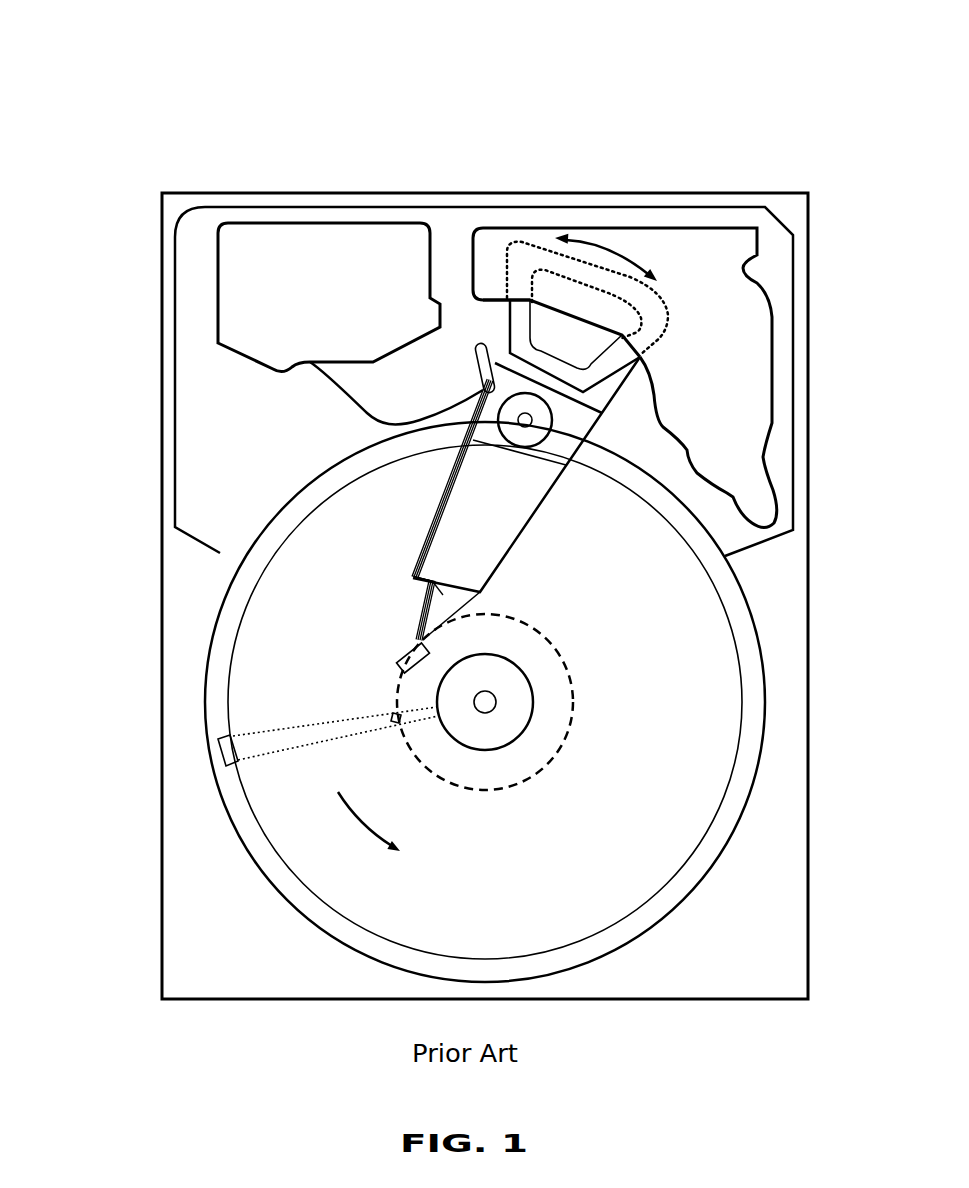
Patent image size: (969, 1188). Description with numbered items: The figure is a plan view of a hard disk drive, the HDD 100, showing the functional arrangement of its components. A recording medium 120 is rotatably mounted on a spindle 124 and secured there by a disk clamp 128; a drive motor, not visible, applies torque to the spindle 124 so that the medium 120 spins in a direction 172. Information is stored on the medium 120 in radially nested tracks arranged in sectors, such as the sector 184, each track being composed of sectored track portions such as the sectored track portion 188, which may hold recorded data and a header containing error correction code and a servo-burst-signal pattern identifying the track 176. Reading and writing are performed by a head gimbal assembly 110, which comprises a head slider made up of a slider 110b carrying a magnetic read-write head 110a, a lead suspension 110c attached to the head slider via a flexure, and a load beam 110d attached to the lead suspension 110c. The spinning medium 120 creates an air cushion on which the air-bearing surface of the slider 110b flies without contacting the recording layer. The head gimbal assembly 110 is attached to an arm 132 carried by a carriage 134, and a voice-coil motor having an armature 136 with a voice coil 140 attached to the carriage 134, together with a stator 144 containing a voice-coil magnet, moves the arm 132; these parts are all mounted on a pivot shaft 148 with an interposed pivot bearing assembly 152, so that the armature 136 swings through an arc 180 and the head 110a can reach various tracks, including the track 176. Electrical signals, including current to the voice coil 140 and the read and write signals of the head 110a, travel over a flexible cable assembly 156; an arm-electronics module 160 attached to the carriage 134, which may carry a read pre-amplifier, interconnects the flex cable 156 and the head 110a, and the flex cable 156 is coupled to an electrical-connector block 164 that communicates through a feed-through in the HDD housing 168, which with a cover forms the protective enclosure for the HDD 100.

The hard disk drive 100 is at (88, 69).
The head gimbal assembly 110 is at (90, 505).
The magnetic read-write head 110a is at (400, 650).
The slider 110b is at (417, 627).
The lead suspension 110c is at (425, 600).
The load beam 110d is at (417, 568).
The recording medium 120 is at (668, 653).
The spindle 124 is at (487, 702).
The disk clamp 128 is at (510, 718).
The arm 132 is at (477, 535).
The carriage 134 is at (543, 453).
The armature 136 is at (508, 338).
The voice coil 140 is at (520, 312).
The stator 144 is at (738, 322).
The pivot shaft 148 is at (532, 420).
The pivot bearing assembly 152 is at (540, 432).
The flexible cable assembly 156 is at (340, 395).
The arm-electronics module 160 is at (480, 385).
The electrical-connector block 164 is at (243, 295).
The HDD housing 168 is at (788, 207).
The direction 172 is at (375, 827).
The track 176 is at (563, 660).
The arc 180 is at (607, 243).
The sector 184 is at (218, 748).
The sectored track portion 188 is at (388, 715).